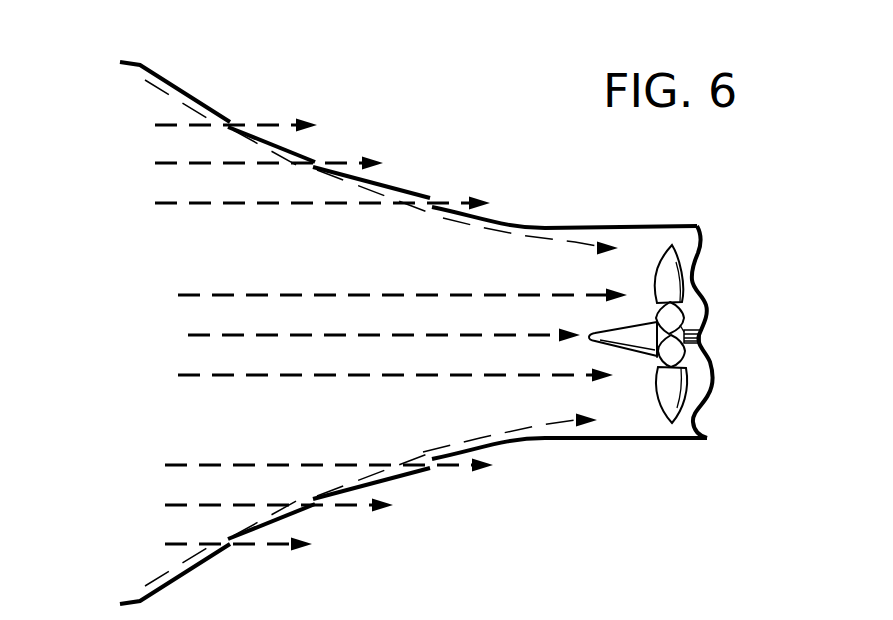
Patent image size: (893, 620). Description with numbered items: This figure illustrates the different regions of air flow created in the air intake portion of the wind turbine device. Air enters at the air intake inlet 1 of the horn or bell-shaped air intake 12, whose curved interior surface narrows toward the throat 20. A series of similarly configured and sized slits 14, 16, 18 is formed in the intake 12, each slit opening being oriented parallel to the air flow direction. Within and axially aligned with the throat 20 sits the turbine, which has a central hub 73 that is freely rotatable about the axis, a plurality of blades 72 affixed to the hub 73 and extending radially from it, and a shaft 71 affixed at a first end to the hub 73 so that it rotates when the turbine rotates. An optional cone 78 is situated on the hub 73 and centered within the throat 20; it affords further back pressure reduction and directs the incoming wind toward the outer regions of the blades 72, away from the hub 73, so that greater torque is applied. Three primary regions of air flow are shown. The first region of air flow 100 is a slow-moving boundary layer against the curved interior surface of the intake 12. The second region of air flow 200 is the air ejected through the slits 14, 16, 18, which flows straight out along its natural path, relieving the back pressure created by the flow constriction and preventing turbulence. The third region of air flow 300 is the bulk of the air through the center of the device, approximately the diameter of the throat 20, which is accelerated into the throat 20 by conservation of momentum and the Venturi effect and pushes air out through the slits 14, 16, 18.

The air intake inlet 1 is at (70, 293).
The air intake 12 is at (396, 87).
The slit 14 is at (233, 122).
The slit 16 is at (316, 162).
The slit 18 is at (436, 205).
The throat 20 is at (643, 222).
The shaft 71 is at (691, 330).
The blades 72 is at (672, 283).
The hub 73 is at (700, 335).
The cone 78 is at (633, 347).
The first region of air flow 100 is at (150, 83).
The second region of air flow 200 is at (155, 125).
The third region of air flow 300 is at (178, 295).